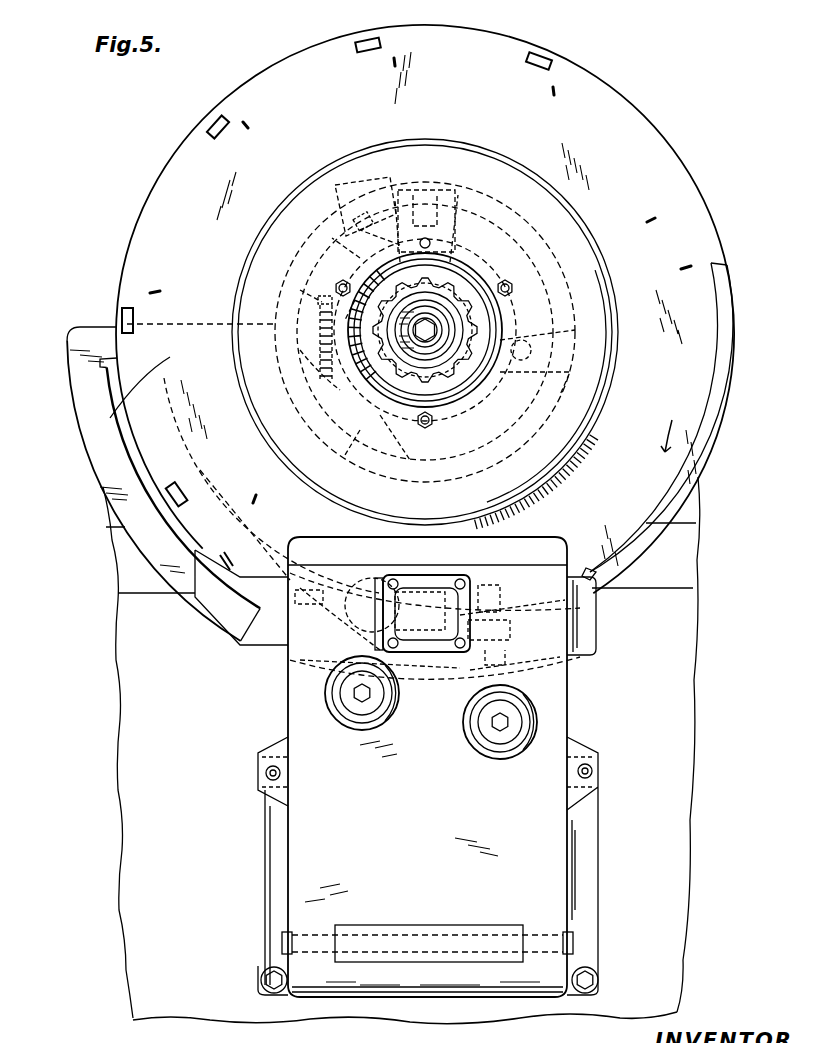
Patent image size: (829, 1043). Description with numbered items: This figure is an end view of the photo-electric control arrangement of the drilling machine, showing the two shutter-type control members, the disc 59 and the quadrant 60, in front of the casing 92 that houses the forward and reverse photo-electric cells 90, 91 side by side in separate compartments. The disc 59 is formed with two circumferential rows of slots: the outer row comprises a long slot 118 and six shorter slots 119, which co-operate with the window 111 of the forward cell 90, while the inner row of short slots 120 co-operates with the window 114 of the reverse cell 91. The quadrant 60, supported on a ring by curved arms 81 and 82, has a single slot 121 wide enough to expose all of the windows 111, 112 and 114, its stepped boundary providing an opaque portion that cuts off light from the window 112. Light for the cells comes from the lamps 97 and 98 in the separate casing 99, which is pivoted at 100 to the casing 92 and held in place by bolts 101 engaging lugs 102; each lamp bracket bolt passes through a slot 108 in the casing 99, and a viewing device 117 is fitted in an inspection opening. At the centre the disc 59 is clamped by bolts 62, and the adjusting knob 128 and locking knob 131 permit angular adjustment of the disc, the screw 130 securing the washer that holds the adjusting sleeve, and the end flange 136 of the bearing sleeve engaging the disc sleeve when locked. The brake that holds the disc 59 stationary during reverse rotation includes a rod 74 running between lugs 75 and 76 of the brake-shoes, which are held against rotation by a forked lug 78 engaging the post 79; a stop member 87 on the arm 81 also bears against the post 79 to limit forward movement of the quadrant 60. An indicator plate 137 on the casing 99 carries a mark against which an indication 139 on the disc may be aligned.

The disc 59 is at (250, 75).
The shorter slots 119 is at (338, 66).
The short slots 120 is at (168, 283).
The quadrant 60 is at (90, 327).
The slot 121 is at (148, 372).
The long slot 118 is at (717, 355).
The screw 130 is at (440, 330).
The adjusting knob 128 is at (440, 286).
The locking knob 131 is at (430, 325).
The bolts 62 is at (343, 281).
The curved arm 81 is at (400, 195).
The post 79 is at (441, 193).
The forked lug 78 is at (460, 201).
The stop member 87 is at (358, 226).
The curved arm 82 is at (545, 378).
The rod 74 is at (318, 336).
The lug 75 is at (319, 302).
The lug 76 is at (318, 305).
The end flange 136 is at (240, 592).
The indicator plate 137 is at (205, 602).
The indication 139 is at (225, 553).
The casing 99 is at (565, 699).
The slot 114 is at (422, 613).
The viewing device 117 is at (427, 583).
The electric lamp 98 is at (367, 573).
The window 111 is at (500, 598).
The electric lamp 97 is at (506, 618).
The window 112 is at (506, 640).
The forward photo-electric cell 90 is at (502, 658).
The reverse photo-electric cell 91 is at (342, 645).
The slot 108 is at (398, 712).
The casing 92 is at (594, 872).
The bolts 101 is at (283, 773).
The lugs 102 is at (265, 773).
The pivot 100 is at (537, 937).